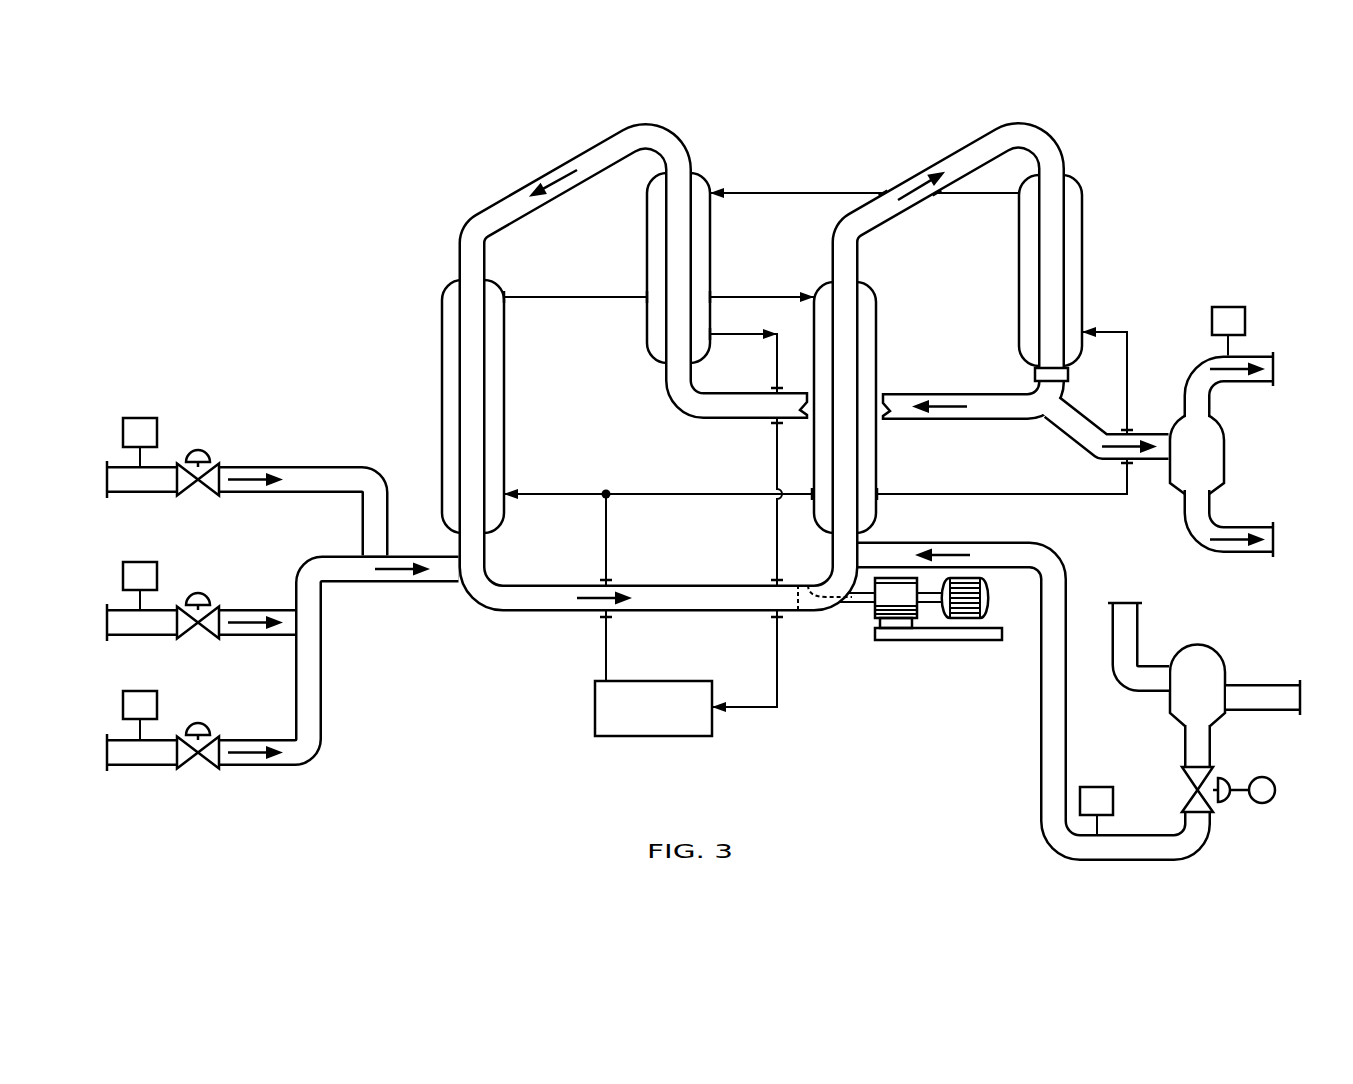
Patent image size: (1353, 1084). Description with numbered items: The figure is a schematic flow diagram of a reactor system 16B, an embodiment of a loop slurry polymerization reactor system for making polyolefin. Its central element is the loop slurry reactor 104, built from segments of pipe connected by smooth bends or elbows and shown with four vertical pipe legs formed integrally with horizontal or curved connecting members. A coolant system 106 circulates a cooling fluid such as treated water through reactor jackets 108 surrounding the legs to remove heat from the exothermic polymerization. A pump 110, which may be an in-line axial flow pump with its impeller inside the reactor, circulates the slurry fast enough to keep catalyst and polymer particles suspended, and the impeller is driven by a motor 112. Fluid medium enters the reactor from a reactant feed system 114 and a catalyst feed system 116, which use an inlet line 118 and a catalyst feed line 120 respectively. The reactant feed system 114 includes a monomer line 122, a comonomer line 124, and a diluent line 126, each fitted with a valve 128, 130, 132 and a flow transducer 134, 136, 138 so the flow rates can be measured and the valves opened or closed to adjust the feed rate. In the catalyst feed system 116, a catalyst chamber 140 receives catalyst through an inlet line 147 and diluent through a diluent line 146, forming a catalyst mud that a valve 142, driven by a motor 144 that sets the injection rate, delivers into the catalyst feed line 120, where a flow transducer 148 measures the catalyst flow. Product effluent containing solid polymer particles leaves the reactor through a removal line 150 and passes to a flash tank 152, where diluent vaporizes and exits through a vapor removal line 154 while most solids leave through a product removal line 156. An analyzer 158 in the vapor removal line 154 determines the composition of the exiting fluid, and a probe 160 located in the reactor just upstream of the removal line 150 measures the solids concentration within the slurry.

The reactor system 16B is at (788, 92).
The loop slurry reactor 104 is at (950, 154).
The coolant system 106 is at (665, 681).
The reactor jackets 108 is at (505, 358).
The pump 110 is at (877, 616).
The motor 112 is at (988, 582).
The reactant feed system 114 is at (235, 617).
The catalyst feed system 116 is at (1203, 724).
The inlet line 118 is at (373, 584).
The catalyst feed line 120 is at (990, 542).
The monomer line 122 is at (232, 740).
The comonomer line 124 is at (232, 610).
The diluent line 126 is at (266, 467).
The valve 128 is at (190, 771).
The valve 130 is at (190, 641).
The valve 132 is at (190, 498).
The flow transducer 134 is at (135, 692).
The flow transducer 136 is at (135, 563).
The flow transducer 138 is at (135, 419).
The catalyst chamber 140 is at (1206, 647).
The valve 142 is at (1226, 778).
The motor 144 is at (1266, 778).
The diluent line 146 is at (1255, 685).
The inlet line 147 is at (1140, 622).
The flow transducer 148 is at (1097, 787).
The removal line 150 is at (1077, 445).
The flash tank 152 is at (1225, 455).
The vapor removal line 154 is at (1232, 385).
The product removal line 156 is at (1240, 527).
The analyzer 158 is at (1228, 307).
The probe 160 is at (1067, 376).